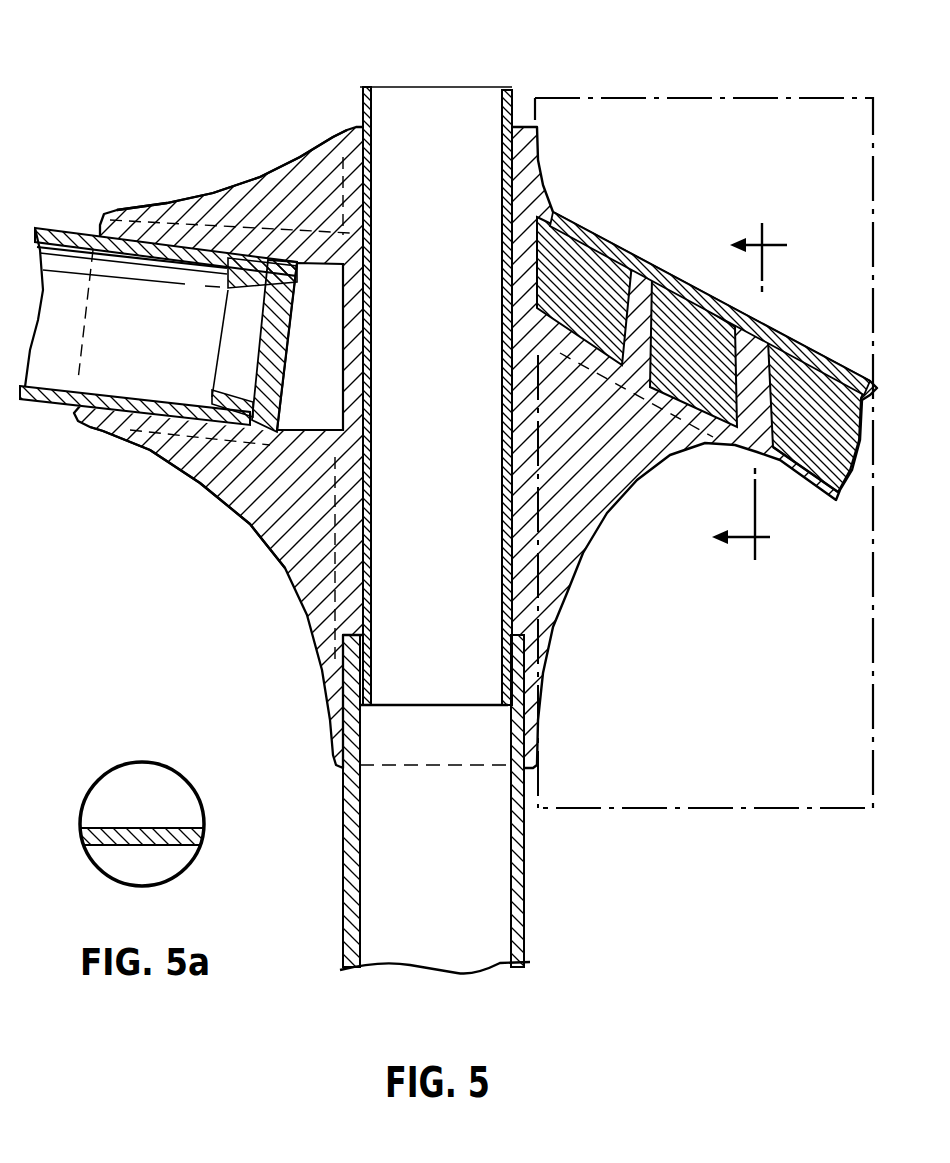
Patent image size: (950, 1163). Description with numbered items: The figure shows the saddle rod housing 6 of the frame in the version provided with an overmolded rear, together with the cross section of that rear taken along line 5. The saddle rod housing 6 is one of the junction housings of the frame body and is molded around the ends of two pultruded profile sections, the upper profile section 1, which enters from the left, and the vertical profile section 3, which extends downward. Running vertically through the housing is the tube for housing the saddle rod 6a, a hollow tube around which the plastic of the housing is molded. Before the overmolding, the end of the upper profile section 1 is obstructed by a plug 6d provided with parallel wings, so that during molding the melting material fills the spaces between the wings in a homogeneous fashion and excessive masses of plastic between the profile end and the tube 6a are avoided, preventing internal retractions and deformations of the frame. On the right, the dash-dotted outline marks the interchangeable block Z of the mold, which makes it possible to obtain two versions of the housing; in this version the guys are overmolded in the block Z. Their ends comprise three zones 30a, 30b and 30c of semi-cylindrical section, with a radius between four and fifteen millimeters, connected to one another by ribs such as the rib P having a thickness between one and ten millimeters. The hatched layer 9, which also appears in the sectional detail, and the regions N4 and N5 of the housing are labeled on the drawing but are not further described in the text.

In FIG. 5, the upper profile section 1 is at (68, 223).
In FIG. 5, the vertical profile section 3 is at (513, 900).
In FIG. 5, the section line 5 is at (750, 392).
In FIG. 5, the saddle rod housing 6 is at (517, 568).
In FIG. 5, the tube for housing the saddle rod 6a is at (520, 84).
In FIG. 5, the plug 6d is at (215, 457).
In FIG. 5, the liner band / protective layer 9 is at (780, 347).
In FIG. 5a, the liner band / protective layer 9 is at (193, 830).
In FIG. 5, the zone of the guy end 30a is at (600, 268).
In FIG. 5, the zone of the guy end 30b is at (755, 335).
In FIG. 5, the zone of the guy end 30c is at (790, 465).
In FIG. 5, the rib P is at (640, 320).
In FIG. 5, the flange region N4 is at (240, 207).
In FIG. 5, the fillet region N5 is at (193, 470).
In FIG. 5, the interchangeable block Z is at (704, 452).